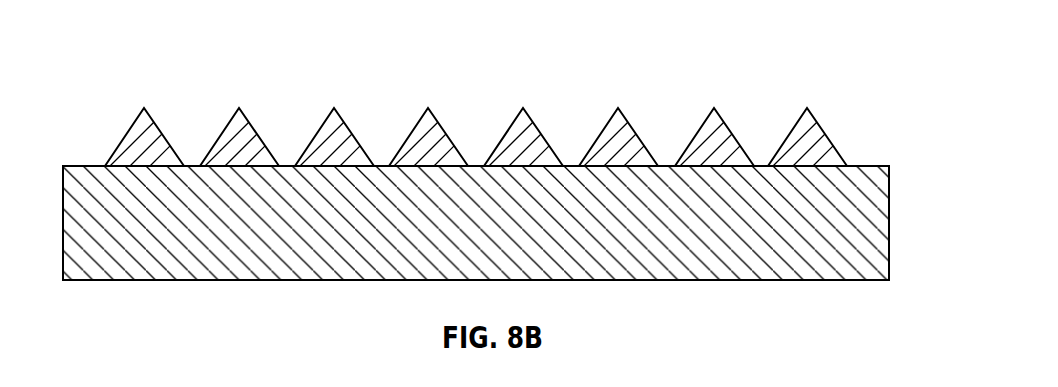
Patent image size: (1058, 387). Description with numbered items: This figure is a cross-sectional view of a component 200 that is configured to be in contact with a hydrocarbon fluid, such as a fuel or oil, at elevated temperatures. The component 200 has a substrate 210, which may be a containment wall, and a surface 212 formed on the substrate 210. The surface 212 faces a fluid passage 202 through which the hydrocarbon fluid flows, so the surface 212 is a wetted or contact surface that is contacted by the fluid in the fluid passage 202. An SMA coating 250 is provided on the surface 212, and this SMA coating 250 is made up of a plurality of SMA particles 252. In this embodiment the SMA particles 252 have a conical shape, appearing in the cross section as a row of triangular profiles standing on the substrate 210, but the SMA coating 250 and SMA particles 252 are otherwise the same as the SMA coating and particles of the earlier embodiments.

The component 200 is at (121, 30).
The fluid passage 202 is at (649, 42).
The substrate 210 is at (876, 215).
The surface 212 is at (94, 158).
The SMA coating 250 is at (897, 103).
The SMA particles 252 is at (814, 136).